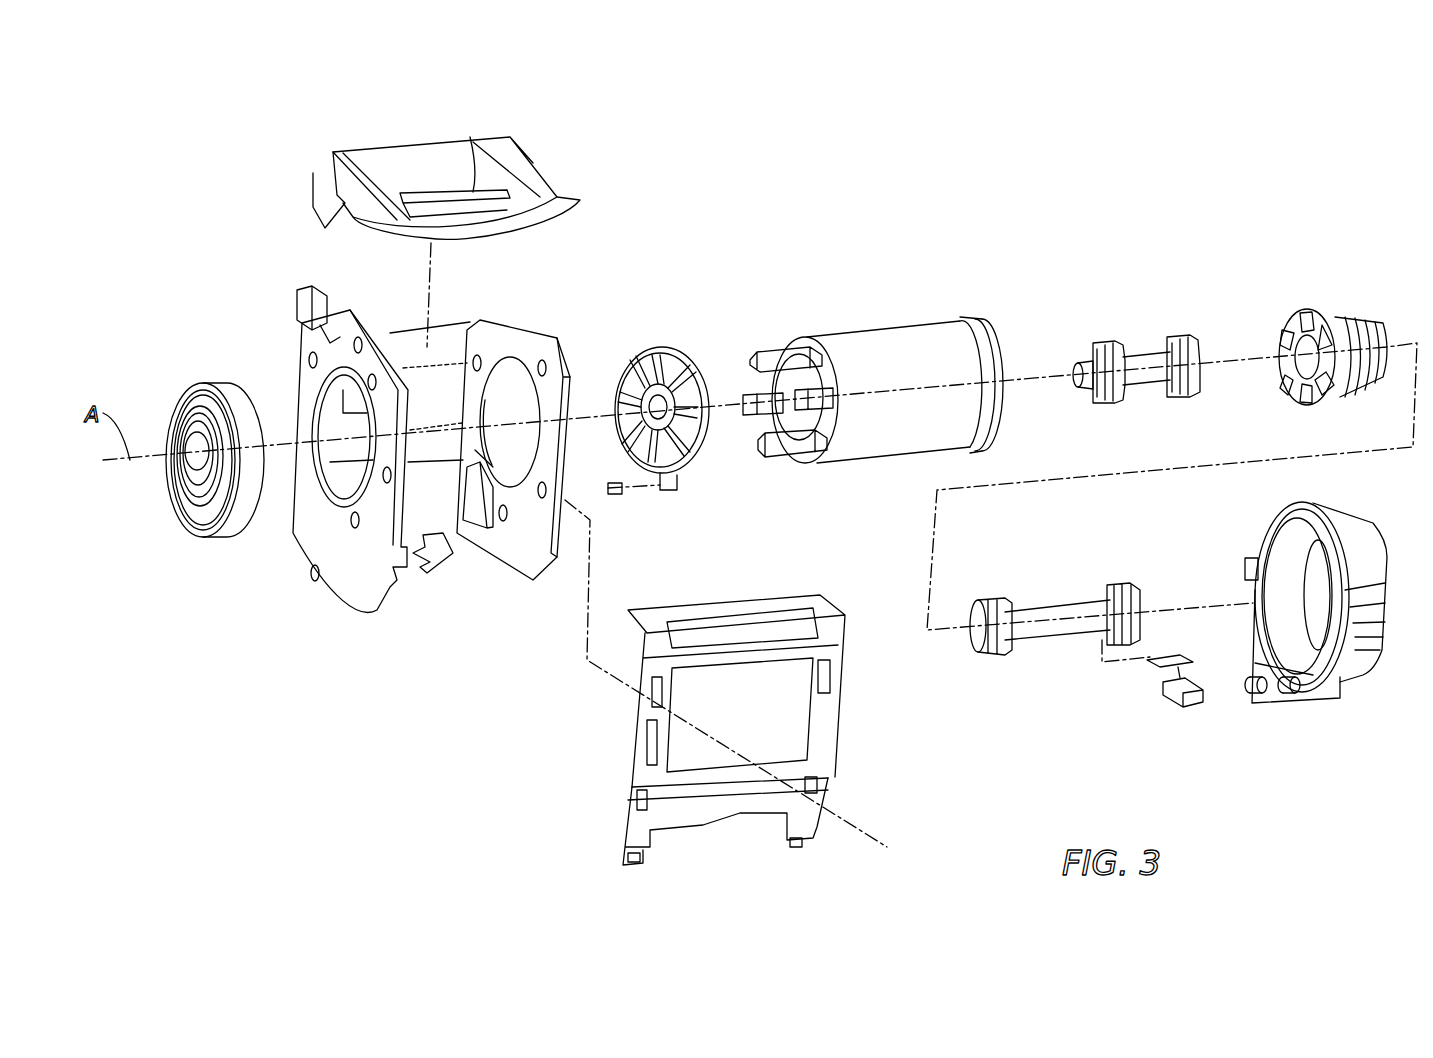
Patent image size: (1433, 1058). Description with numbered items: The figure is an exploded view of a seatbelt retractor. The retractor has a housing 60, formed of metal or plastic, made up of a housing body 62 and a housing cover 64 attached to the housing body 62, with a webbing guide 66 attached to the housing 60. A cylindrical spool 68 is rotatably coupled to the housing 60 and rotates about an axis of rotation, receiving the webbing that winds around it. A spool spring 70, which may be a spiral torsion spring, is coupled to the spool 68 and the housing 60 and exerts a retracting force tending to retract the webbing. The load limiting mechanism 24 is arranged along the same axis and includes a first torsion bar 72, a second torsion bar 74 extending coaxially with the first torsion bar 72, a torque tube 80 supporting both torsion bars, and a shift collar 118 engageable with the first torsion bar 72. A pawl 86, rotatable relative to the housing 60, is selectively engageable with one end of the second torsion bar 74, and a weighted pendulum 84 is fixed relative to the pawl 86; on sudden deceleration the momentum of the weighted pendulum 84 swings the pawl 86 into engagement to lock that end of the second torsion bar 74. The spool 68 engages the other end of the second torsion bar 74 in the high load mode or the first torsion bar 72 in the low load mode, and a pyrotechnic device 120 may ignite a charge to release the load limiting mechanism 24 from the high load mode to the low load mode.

The load limiting mechanism 24 is at (1243, 300).
The housing 60 is at (532, 310).
The housing body 62 is at (350, 620).
The housing cover 64 is at (630, 760).
The webbing guide 66 is at (533, 163).
The spool 68 is at (880, 318).
The spool spring 70 is at (207, 537).
The first torsion bar 72 is at (1130, 328).
The second torsion bar 74 is at (1057, 587).
The torque tube 80 is at (1342, 313).
The weighted pendulum 84 is at (1173, 705).
The pawl 86 is at (1167, 657).
The shift collar 118 is at (657, 350).
The pyrotechnic device 120 is at (618, 493).